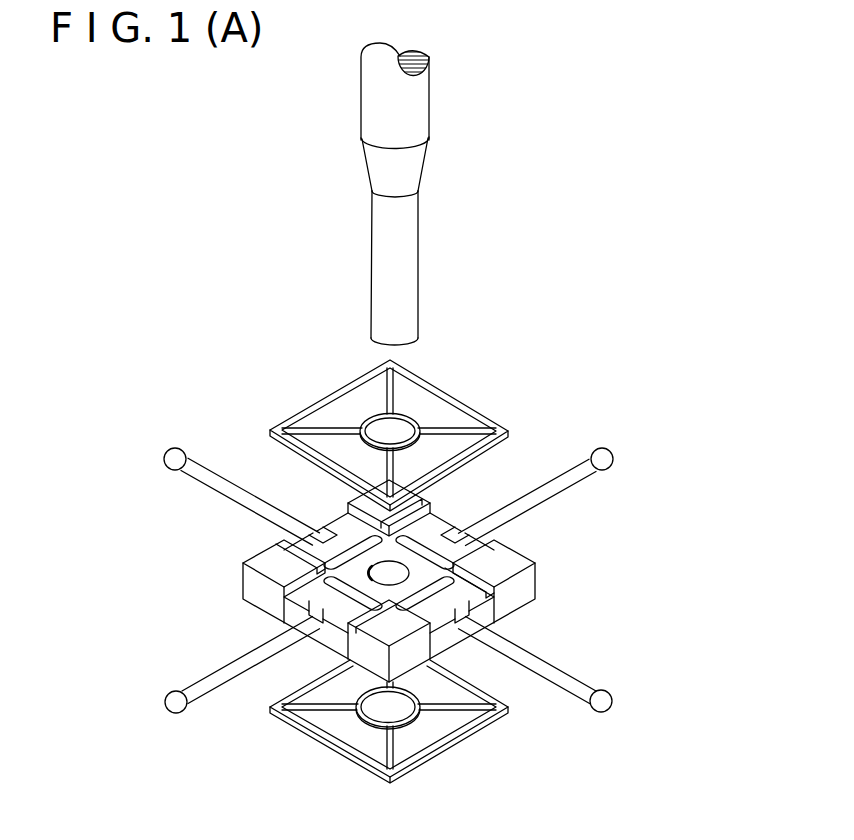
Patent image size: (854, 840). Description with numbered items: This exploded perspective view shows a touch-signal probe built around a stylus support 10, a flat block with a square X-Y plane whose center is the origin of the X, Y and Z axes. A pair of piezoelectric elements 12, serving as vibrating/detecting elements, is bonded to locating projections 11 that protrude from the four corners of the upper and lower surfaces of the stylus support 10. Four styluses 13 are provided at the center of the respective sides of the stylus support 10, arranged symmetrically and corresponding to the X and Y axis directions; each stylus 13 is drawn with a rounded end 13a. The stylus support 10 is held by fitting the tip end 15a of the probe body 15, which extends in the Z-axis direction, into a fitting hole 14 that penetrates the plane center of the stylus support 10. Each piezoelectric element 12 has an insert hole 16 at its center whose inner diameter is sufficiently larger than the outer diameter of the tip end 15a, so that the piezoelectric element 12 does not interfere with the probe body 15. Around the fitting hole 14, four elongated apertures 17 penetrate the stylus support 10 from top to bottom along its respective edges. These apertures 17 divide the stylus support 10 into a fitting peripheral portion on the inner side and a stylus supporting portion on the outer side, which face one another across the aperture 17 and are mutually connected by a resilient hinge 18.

The stylus support 10 is at (413, 626).
The locating projection 11 is at (417, 498).
The piezoelectric element 12 is at (443, 400).
The stylus 13 is at (225, 480).
The ball end of rod 13a is at (163, 458).
The fitting hole 14 is at (380, 568).
The probe body 15 is at (418, 85).
The tip end 15a is at (397, 247).
The insert hole 16 is at (383, 432).
The elongated aperture 17 is at (290, 520).
The resilient hinge 18 is at (433, 515).